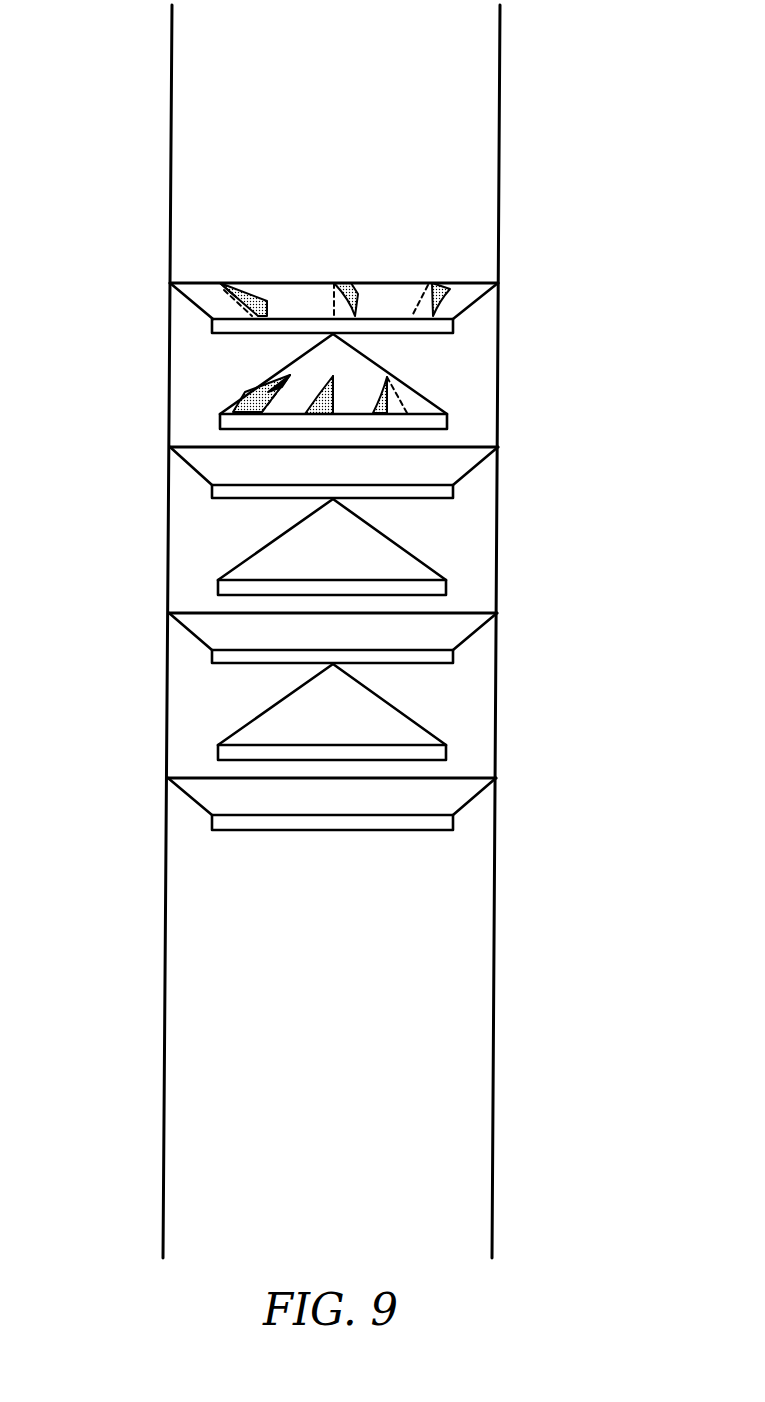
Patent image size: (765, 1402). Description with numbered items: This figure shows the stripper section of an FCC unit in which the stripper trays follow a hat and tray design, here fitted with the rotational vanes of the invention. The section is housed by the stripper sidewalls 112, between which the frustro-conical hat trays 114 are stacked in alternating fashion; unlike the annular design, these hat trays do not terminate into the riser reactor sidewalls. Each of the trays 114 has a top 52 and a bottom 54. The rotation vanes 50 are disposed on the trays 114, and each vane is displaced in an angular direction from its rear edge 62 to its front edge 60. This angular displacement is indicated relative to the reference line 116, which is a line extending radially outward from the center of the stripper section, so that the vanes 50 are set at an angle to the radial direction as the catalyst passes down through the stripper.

The stripper sidewalls 112 is at (500, 143).
The top 52 is at (245, 282).
The reference line 116 is at (333, 306).
The rotation vanes 50 is at (338, 285).
The bottom 54 is at (242, 334).
The rear edge 62 is at (328, 378).
The front edge 60 is at (310, 378).
The trays 114 is at (422, 396).